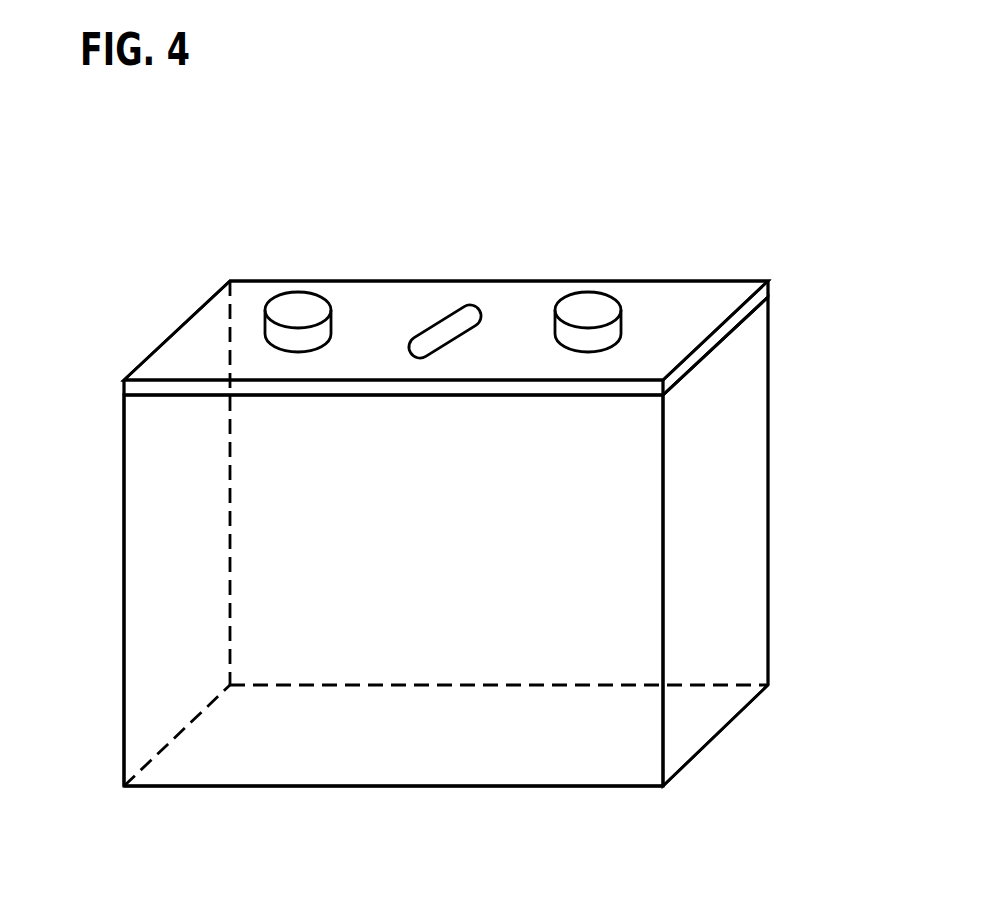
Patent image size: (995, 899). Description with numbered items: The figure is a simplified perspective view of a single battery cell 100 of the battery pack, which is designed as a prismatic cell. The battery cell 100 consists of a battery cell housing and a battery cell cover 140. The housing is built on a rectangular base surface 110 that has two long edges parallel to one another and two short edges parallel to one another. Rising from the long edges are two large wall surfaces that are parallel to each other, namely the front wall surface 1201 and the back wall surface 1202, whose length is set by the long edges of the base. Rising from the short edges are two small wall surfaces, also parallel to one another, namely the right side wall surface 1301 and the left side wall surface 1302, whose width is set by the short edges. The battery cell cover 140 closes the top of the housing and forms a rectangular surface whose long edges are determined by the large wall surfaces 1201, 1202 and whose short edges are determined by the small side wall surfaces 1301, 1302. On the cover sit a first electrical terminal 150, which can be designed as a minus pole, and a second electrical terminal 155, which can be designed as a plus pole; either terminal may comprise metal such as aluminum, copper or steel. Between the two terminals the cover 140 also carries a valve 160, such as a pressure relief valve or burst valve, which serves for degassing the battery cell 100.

The battery cell 100 is at (414, 157).
The rectangular base surface 110 is at (275, 748).
The front wall surface 1201 is at (425, 662).
The back wall surface 1202 is at (638, 508).
The right side wall surface 1301 is at (755, 612).
The left side wall surface 1302 is at (157, 608).
The battery cell cover 140 is at (769, 288).
The first electrical terminal 150 is at (303, 302).
The second electrical terminal 155 is at (593, 302).
The valve 160 is at (470, 305).